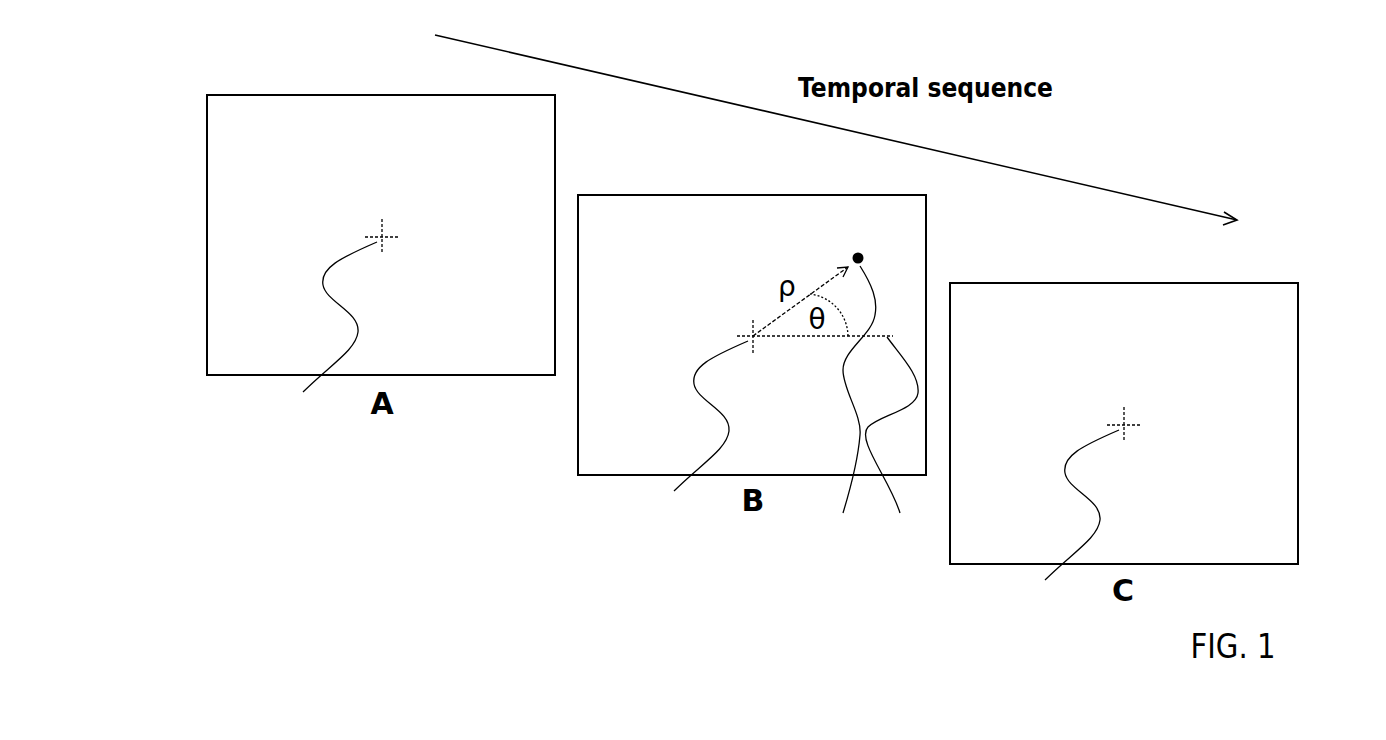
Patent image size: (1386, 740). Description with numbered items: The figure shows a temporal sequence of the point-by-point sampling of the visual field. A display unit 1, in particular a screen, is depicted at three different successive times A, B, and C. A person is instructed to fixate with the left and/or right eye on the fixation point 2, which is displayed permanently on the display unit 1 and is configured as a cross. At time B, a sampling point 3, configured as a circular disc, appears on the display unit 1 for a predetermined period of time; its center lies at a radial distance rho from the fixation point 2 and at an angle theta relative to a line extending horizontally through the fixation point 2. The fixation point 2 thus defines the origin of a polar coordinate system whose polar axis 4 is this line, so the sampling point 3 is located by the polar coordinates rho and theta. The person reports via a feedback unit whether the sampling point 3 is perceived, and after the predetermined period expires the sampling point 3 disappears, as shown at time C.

The display unit 1 is at (213, 378).
The fixation point 2 is at (702, 429).
The sampling point 3 is at (853, 407).
The polar axis 4 is at (891, 441).